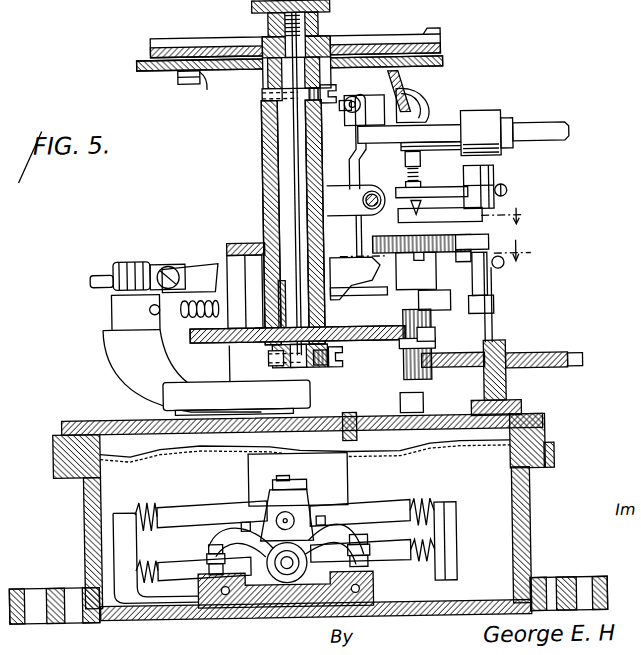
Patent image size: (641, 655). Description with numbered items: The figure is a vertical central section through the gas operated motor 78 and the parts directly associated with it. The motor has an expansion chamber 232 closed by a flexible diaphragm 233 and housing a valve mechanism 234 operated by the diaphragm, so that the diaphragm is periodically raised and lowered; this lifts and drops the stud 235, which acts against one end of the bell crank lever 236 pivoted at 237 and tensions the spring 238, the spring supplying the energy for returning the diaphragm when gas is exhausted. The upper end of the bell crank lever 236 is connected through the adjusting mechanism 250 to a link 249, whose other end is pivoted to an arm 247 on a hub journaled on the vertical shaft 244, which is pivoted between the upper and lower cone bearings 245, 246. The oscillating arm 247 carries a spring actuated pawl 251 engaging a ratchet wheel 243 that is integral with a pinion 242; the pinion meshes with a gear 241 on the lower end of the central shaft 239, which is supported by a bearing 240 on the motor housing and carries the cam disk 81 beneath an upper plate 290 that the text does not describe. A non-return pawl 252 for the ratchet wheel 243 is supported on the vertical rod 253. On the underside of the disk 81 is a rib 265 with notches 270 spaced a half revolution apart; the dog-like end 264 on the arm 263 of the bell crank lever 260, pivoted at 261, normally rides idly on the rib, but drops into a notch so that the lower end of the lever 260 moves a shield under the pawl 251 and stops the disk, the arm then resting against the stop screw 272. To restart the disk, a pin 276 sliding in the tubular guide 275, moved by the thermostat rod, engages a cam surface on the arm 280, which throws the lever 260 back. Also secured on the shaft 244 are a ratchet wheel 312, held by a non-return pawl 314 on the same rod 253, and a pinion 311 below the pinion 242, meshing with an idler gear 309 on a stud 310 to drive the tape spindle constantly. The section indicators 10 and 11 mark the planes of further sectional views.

The top plate 290 is at (156, 48).
The cam disk 81 is at (141, 62).
The notches 270 is at (182, 77).
The rib 265 is at (200, 91).
The bearing 240 is at (275, 179).
The central shaft 239 is at (290, 124).
The gear 241 is at (207, 341).
The link 249 is at (192, 268).
The adjusting mechanism 250 is at (154, 265).
The spring 238 is at (193, 328).
The bell crank lever 236 is at (129, 359).
The pivot 237 is at (187, 408).
The stud 235 is at (305, 400).
The pivot 261 is at (354, 98).
The dog-like end 264 is at (409, 84).
The arm 263 is at (422, 114).
The bell crank lever 260 is at (371, 163).
The arm 280 is at (382, 133).
The tubular guide 275 is at (486, 123).
The pin 276 is at (534, 125).
The stop screw 272 is at (387, 186).
The upper cone bearing 245 is at (421, 214).
The vertical shaft 244 is at (417, 223).
The ratchet wheel 312 is at (421, 235).
The non-return pawl 314 is at (516, 242).
The section line 10 is at (443, 230).
The section line 11 is at (527, 250).
The arm 247 is at (441, 268).
The pawl 251 is at (453, 302).
The vertical rod 253 is at (506, 292).
The non-return pawl 252 is at (495, 310).
The ratchet wheel 243 is at (369, 313).
The pinion 311 is at (406, 355).
The pinion 242 is at (432, 340).
The stud 310 is at (498, 380).
The idler gear 309 is at (582, 352).
The expansion chamber 232 is at (493, 482).
The gas operated motor 78 is at (86, 496).
The flexible diaphragm 233 is at (419, 454).
The lower cone bearing 246 is at (405, 412).
The valve mechanism 234 is at (262, 548).